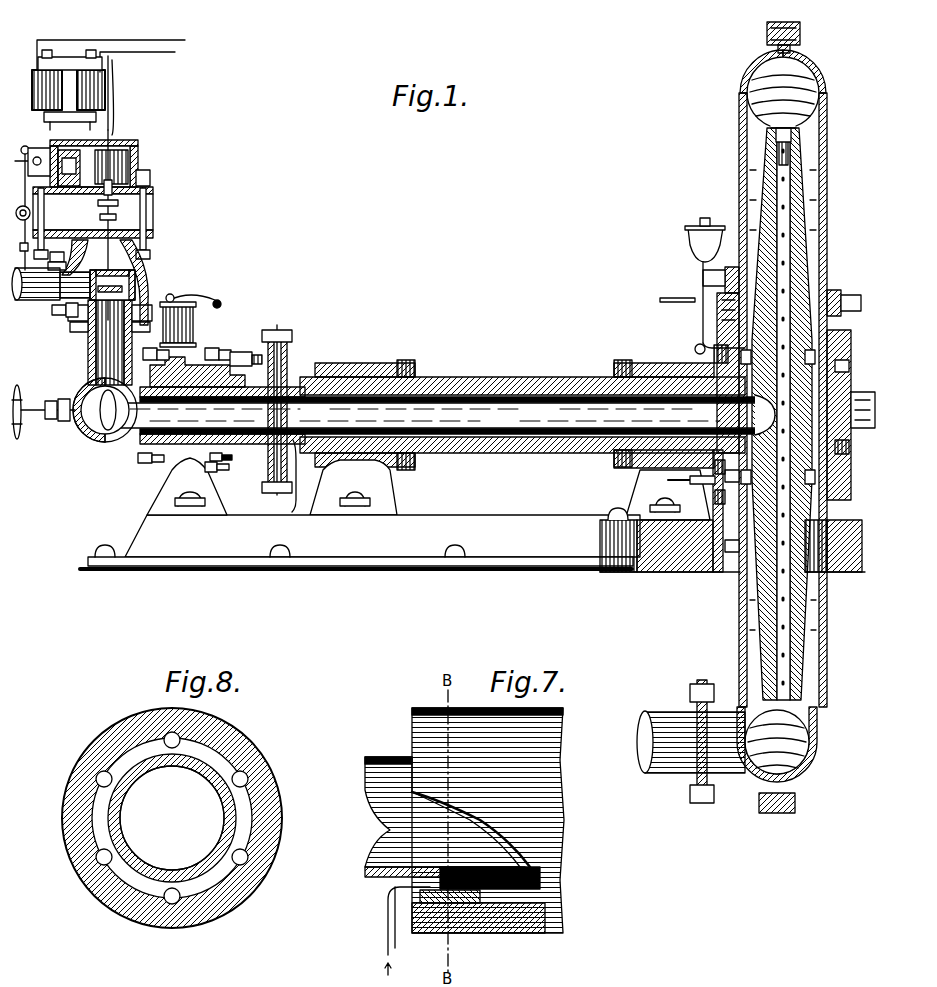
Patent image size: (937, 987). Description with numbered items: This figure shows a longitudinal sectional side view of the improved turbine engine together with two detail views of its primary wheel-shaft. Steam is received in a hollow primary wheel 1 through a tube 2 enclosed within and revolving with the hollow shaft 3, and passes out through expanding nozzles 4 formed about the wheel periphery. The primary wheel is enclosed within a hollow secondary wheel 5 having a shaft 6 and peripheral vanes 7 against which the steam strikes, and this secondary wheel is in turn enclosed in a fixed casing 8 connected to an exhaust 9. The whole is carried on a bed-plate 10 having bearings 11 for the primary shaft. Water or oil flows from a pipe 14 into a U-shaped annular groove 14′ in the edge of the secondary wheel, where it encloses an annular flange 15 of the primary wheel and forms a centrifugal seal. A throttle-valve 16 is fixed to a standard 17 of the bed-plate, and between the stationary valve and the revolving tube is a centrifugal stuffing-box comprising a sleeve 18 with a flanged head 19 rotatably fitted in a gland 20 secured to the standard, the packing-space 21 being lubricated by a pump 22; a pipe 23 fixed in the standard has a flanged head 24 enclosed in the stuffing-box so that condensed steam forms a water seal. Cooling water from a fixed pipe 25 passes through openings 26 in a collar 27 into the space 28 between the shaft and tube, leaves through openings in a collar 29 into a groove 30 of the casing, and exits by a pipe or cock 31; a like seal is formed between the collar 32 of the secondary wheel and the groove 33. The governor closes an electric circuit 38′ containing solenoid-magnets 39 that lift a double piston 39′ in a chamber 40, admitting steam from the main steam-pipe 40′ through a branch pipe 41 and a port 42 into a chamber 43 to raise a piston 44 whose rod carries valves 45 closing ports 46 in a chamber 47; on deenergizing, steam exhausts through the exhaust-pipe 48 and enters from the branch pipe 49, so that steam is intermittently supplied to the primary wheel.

In FIG. 1, the primary wheel 1 is at (800, 555).
In FIG. 1, the tube 2 is at (638, 395).
In FIG. 8, the tube 2 is at (172, 818).
In FIG. 7, the tube 2 is at (384, 757).
In FIG. 1, the hollow shaft 3 is at (425, 372).
In FIG. 8, the hollow shaft 3 is at (252, 750).
In FIG. 7, the hollow shaft 3 is at (420, 708).
In FIG. 1, the expanding nozzles 4 is at (793, 288).
In FIG. 1, the secondary wheel 5 is at (770, 152).
In FIG. 1, the shaft 6 is at (858, 392).
In FIG. 1, the vanes 7 is at (792, 135).
In FIG. 1, the casing 8 is at (745, 92).
In FIG. 1, the exhaust 9 is at (740, 772).
In FIG. 1, the bed-plate 10 is at (510, 550).
In FIG. 1, the bearings 11 is at (675, 372).
In FIG. 1, the pipe 14 is at (700, 290).
In FIG. 1, the U-shaped annular groove 14′ is at (738, 332).
In FIG. 1, the annular flange 15 is at (715, 500).
In FIG. 1, the throttle-valve 16 is at (75, 396).
In FIG. 1, the standard 17 is at (170, 478).
In FIG. 1, the sleeve 18 is at (237, 366).
In FIG. 1, the flanged head 19 is at (268, 465).
In FIG. 1, the gland 20 is at (222, 450).
In FIG. 1, the packing-space 21 is at (190, 372).
In FIG. 1, the pump 22 is at (190, 305).
In FIG. 1, the pipe 23 is at (430, 415).
In FIG. 1, the flanged head 24 is at (268, 350).
In FIG. 1, the fixed pipe 25 is at (296, 455).
In FIG. 7, the fixed pipe 25 is at (388, 918).
In FIG. 8, the openings 26 is at (95, 775).
In FIG. 7, the openings 26 is at (470, 930).
In FIG. 8, the collar 27 is at (240, 824).
In FIG. 7, the collar 27 is at (435, 930).
In FIG. 1, the space 28 is at (352, 372).
In FIG. 7, the space 28 is at (520, 930).
In FIG. 1, the collar 29 is at (714, 362).
In FIG. 1, the groove 30 is at (700, 348).
In FIG. 1, the pipe or cock 31 is at (700, 484).
In FIG. 1, the collar 32 is at (846, 450).
In FIG. 1, the groove 33 is at (848, 366).
In FIG. 1, the electric circuit 38′ is at (125, 52).
In FIG. 1, the solenoid-magnets 39 is at (32, 90).
In FIG. 1, the double piston 39′ is at (99, 101).
In FIG. 1, the chamber 40 is at (64, 190).
In FIG. 1, the main steam-pipe 40′ is at (50, 299).
In FIG. 1, the branch pipe 41 is at (20, 208).
In FIG. 1, the port 42 is at (92, 182).
In FIG. 1, the chamber 43 is at (135, 173).
In FIG. 1, the piston 44 is at (125, 158).
In FIG. 1, the valves 45 is at (80, 315).
In FIG. 1, the ports 46 is at (140, 258).
In FIG. 1, the chamber 47 is at (138, 288).
In FIG. 1, the exhaust-pipe 48 is at (30, 202).
In FIG. 1, the branch pipe 49 is at (56, 154).